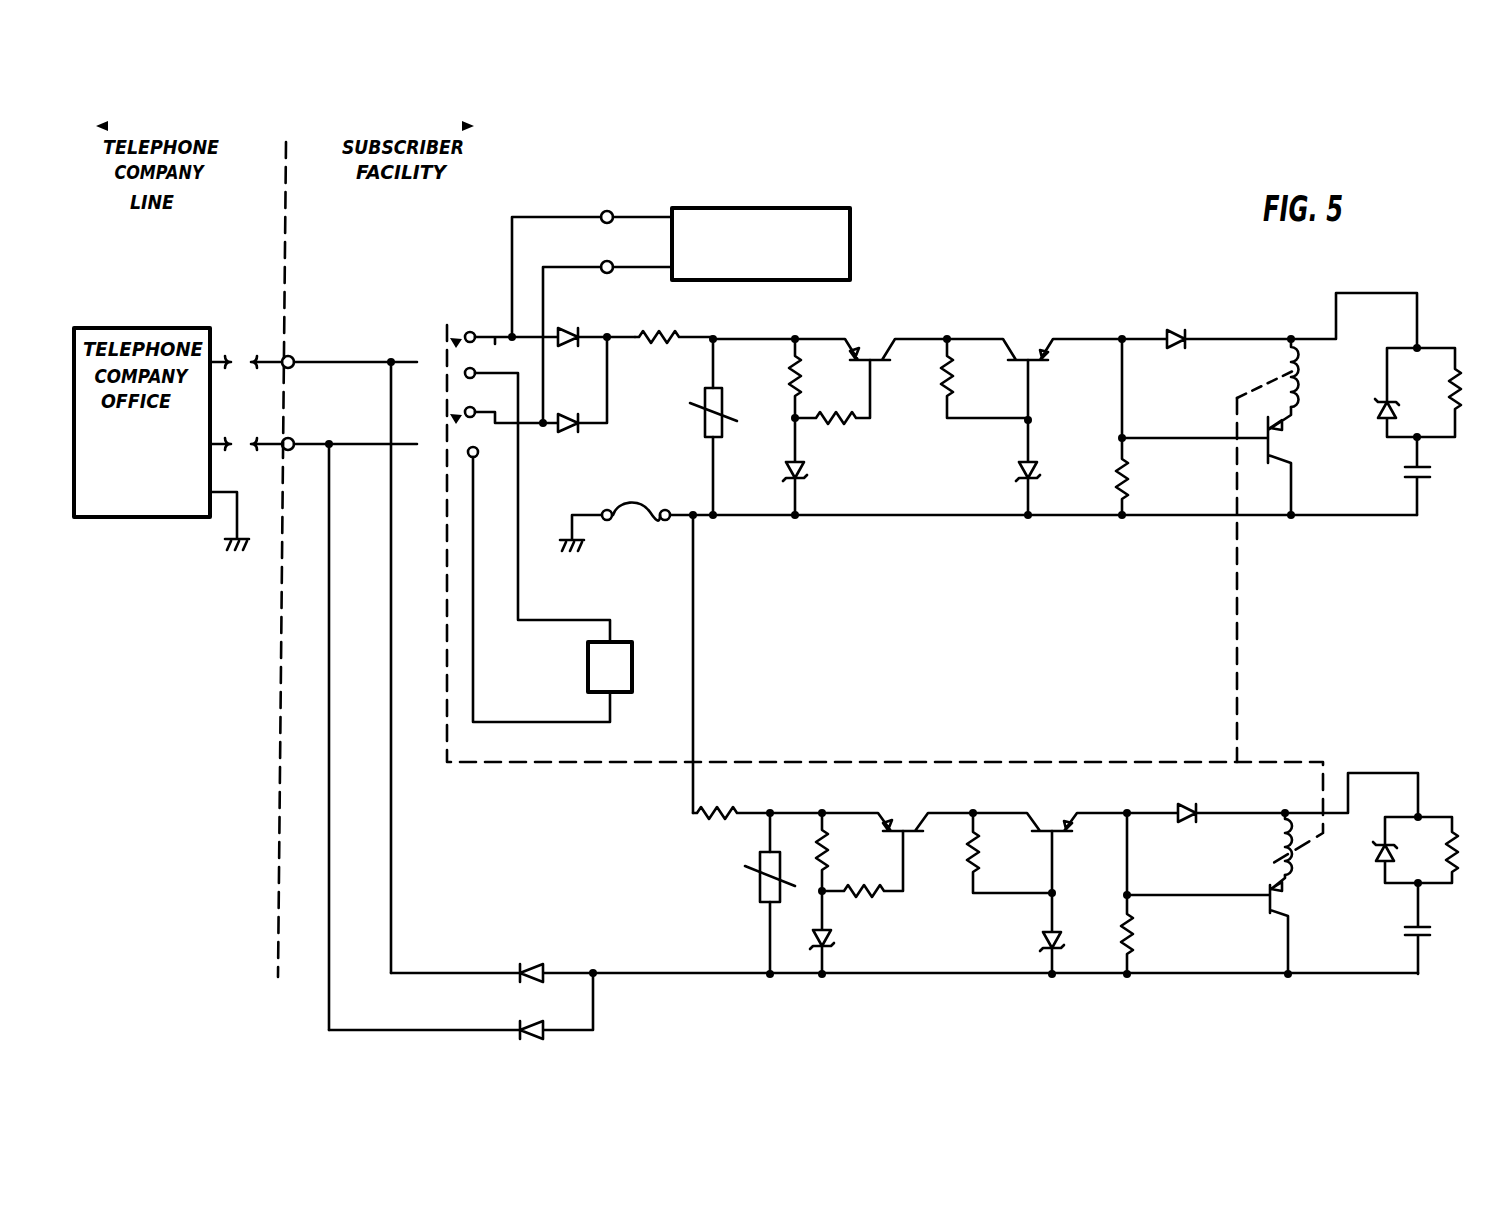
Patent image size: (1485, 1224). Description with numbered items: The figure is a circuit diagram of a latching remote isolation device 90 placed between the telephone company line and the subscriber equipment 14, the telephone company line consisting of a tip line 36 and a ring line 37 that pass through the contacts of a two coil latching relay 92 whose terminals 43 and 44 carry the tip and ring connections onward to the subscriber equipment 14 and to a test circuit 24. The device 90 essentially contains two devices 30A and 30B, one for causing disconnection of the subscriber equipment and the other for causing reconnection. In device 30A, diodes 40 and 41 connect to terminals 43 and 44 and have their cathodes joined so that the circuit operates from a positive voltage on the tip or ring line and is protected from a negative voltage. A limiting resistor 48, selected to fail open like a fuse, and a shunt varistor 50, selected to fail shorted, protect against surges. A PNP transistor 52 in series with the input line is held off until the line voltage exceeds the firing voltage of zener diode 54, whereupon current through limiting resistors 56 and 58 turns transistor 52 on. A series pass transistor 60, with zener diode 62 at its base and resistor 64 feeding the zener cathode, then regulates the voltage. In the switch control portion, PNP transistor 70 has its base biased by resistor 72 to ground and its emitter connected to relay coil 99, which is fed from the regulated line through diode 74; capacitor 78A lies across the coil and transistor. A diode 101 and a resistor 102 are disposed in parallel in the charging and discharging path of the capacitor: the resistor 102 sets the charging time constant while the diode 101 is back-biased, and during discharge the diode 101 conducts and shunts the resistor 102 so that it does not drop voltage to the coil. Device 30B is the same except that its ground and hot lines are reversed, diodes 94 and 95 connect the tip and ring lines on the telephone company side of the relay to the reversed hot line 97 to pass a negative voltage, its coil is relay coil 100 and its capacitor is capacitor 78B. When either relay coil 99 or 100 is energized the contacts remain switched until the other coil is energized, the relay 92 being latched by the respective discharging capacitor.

The subscriber equipment 14 is at (850, 248).
The test circuit 24 is at (632, 650).
The first device 30A is at (1116, 336).
The second device 30B is at (1060, 720).
The tip line 36 is at (258, 348).
The ring line 37 is at (260, 438).
The diode 40 is at (566, 328).
The diode 41 is at (573, 414).
The switch terminal 43 is at (484, 334).
The switch terminal 44 is at (499, 418).
The resistor 48 is at (676, 333).
The varistor 50 is at (704, 429).
The transistor 52 is at (889, 360).
The zener diode 54 is at (813, 458).
The limiting resistor 56 is at (786, 368).
The limiting resistor 58 is at (836, 415).
The transistor 60 is at (1048, 365).
The zener diode 62 is at (1014, 470).
The resistor 64 is at (958, 358).
The transistor 70 is at (1268, 465).
The bias resistor 72 is at (1128, 484).
The diode 74 is at (1176, 350).
The capacitor 78A is at (1410, 480).
The capacitor 78B is at (1404, 934).
The remote isolation device 90 is at (1070, 280).
The two coil latching relay 92 is at (493, 503).
The diode 94 is at (538, 960).
The diode 95 is at (544, 1022).
The hot line 97 is at (722, 976).
The relay coil 99 is at (1306, 397).
The relay coil 100 is at (1300, 862).
The diode 101 is at (1378, 414).
The resistor 102 is at (1450, 374).